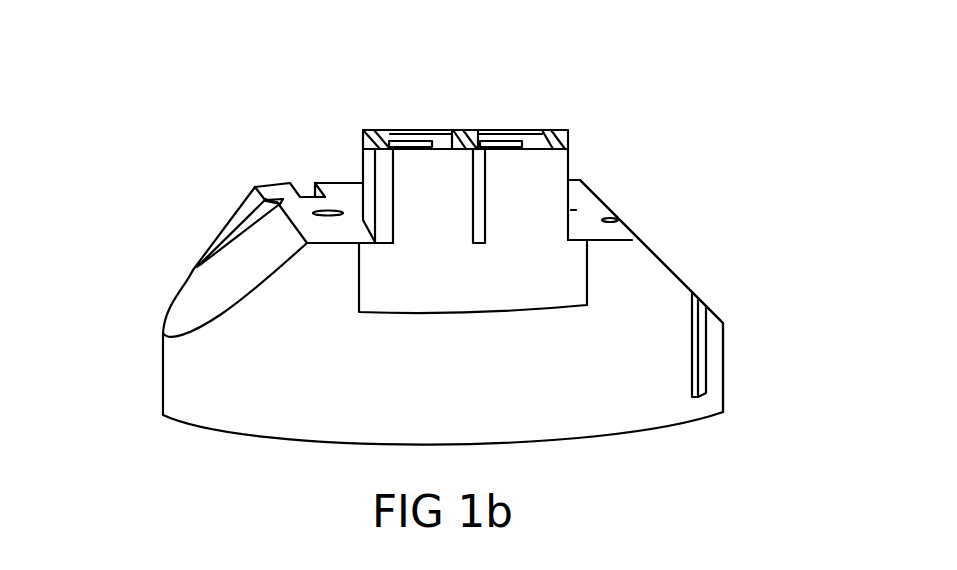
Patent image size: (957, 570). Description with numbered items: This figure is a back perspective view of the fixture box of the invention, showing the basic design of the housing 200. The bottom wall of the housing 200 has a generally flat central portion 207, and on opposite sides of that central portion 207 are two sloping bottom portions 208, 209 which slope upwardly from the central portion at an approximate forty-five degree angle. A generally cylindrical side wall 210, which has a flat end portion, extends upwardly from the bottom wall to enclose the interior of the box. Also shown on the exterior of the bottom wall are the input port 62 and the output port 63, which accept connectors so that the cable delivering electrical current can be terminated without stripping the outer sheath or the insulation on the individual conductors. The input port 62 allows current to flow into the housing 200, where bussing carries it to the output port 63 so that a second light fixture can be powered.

The input port 62 is at (503, 137).
The output port 63 is at (417, 137).
The housing 200 is at (725, 348).
The central portion 207 is at (590, 208).
The sloping bottom portion 208 is at (247, 258).
The sloping bottom portion 209 is at (665, 260).
The side wall 210 is at (237, 370).